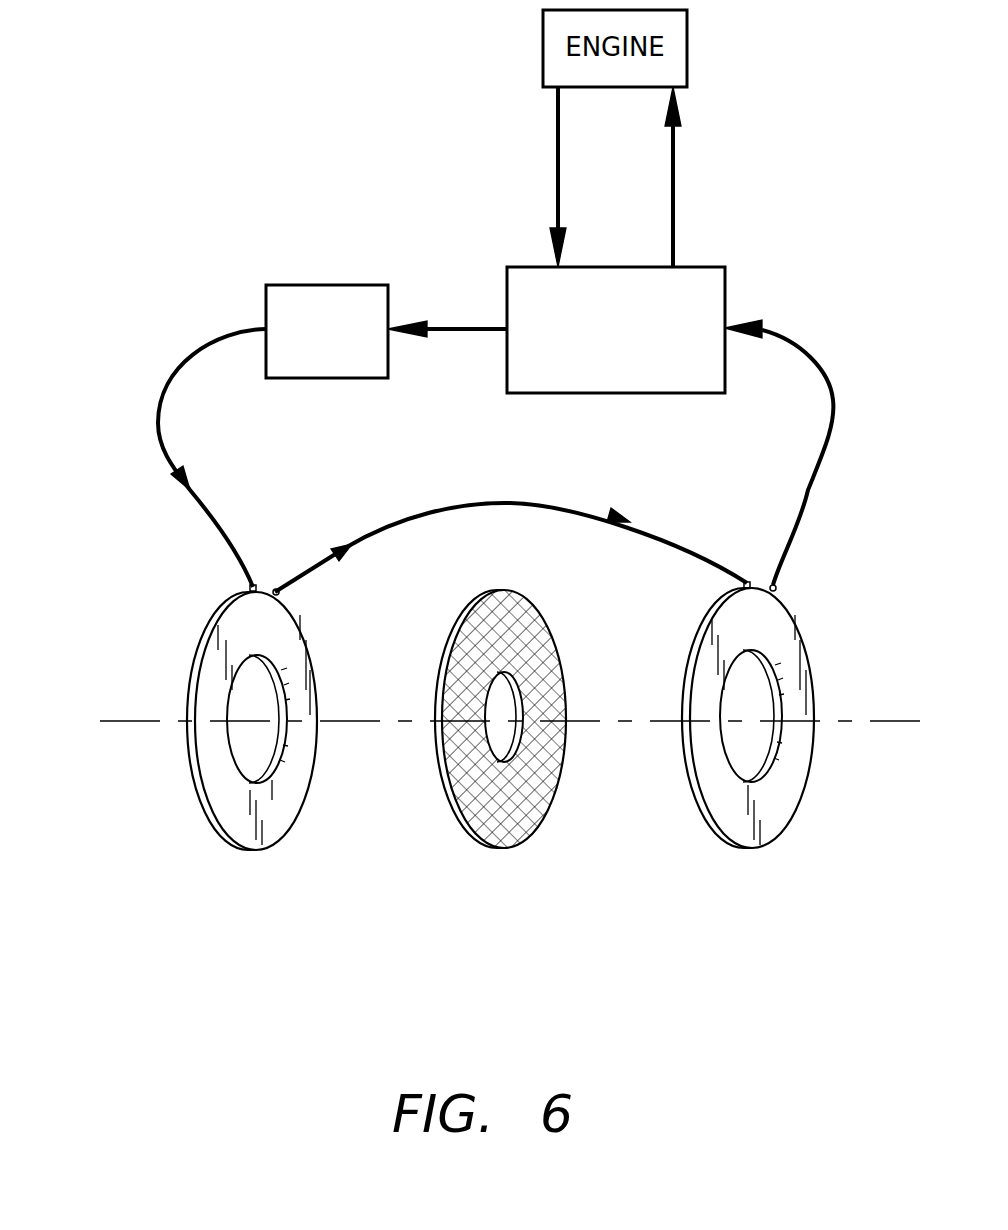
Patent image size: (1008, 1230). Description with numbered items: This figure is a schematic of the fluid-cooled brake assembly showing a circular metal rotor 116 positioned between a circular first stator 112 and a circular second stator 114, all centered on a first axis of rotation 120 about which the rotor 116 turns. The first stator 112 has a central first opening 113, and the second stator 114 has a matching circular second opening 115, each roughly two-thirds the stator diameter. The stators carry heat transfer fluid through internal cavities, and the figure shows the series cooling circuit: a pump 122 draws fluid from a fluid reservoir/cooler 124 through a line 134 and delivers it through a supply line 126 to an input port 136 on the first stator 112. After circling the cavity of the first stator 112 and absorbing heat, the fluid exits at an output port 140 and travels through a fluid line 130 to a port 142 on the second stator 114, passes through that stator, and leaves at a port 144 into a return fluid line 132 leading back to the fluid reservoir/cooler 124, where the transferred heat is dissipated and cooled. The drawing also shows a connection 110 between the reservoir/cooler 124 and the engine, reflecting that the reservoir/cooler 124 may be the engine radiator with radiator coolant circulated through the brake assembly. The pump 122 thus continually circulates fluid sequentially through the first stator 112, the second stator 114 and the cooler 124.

The fluid line to engine 110 is at (673, 180).
The first stator 112 is at (260, 761).
The first opening 113 is at (258, 757).
The second stator 114 is at (802, 749).
The second opening 115 is at (755, 748).
The rotor 116 is at (538, 803).
The first axis of rotation 120 is at (138, 722).
The pump 122 is at (348, 285).
The fluid reservoir/cooler 124 is at (535, 267).
The fluid supply line 126 is at (197, 342).
The fluid line 130 is at (465, 505).
The return fluid line 132 is at (790, 337).
The reservoir-to-pump line 134 is at (473, 328).
The input port 136 is at (250, 585).
The output port 140 is at (273, 590).
The inlet fitting of second disc 142 is at (750, 582).
The outlet fitting of second disc 144 is at (773, 585).